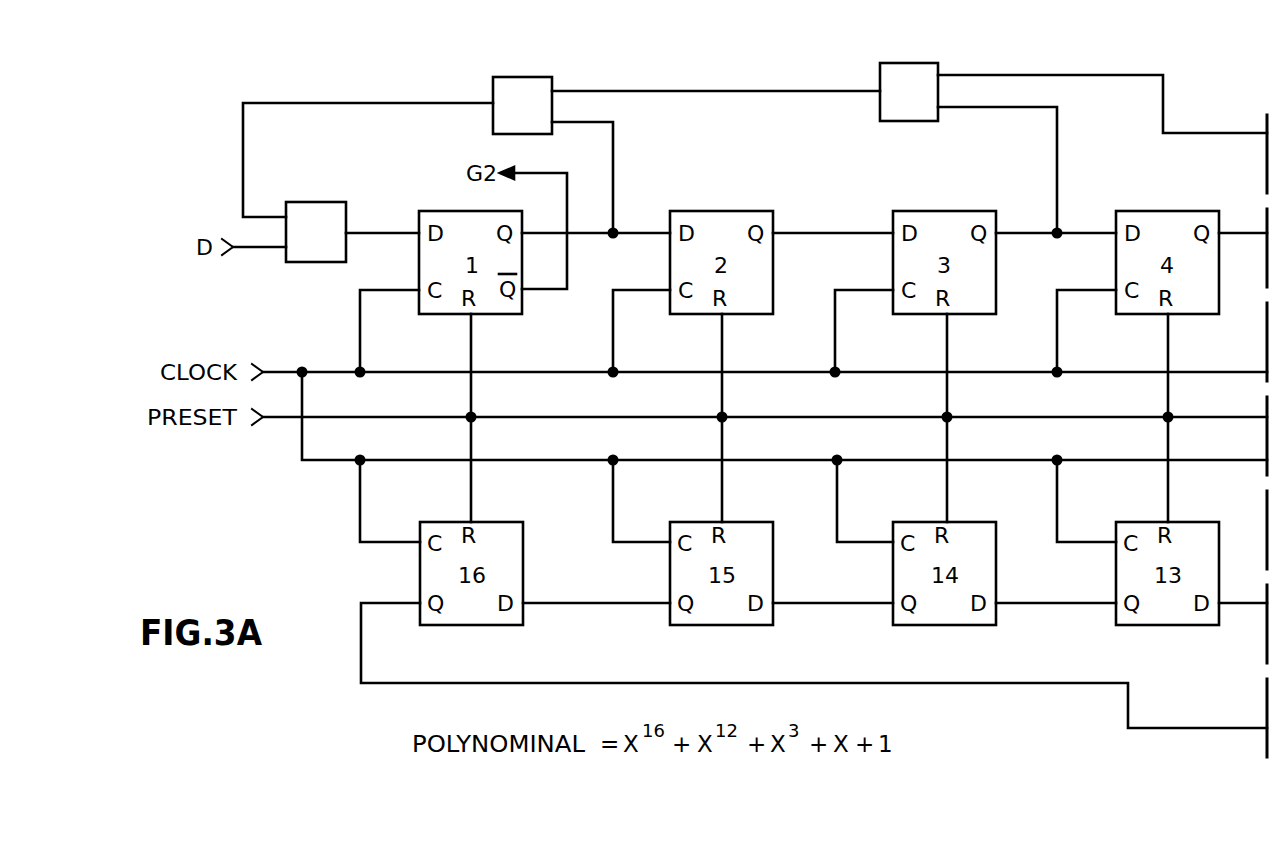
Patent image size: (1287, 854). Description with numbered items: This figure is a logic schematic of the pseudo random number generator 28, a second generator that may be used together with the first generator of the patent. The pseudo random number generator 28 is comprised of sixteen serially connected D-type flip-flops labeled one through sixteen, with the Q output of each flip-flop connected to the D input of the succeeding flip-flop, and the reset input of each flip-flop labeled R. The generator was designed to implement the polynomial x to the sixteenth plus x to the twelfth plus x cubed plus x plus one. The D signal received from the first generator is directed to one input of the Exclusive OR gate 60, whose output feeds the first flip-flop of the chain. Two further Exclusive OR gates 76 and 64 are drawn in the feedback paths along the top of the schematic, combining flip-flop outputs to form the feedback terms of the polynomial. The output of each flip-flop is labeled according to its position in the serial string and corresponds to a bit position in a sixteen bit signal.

The pseudo random number generator 28 is at (731, 70).
The Exclusive OR gate 60 is at (334, 208).
The exclusive-OR gate (feedback) 64 is at (908, 117).
The exclusive-OR gate (feedback) 76 is at (498, 93).